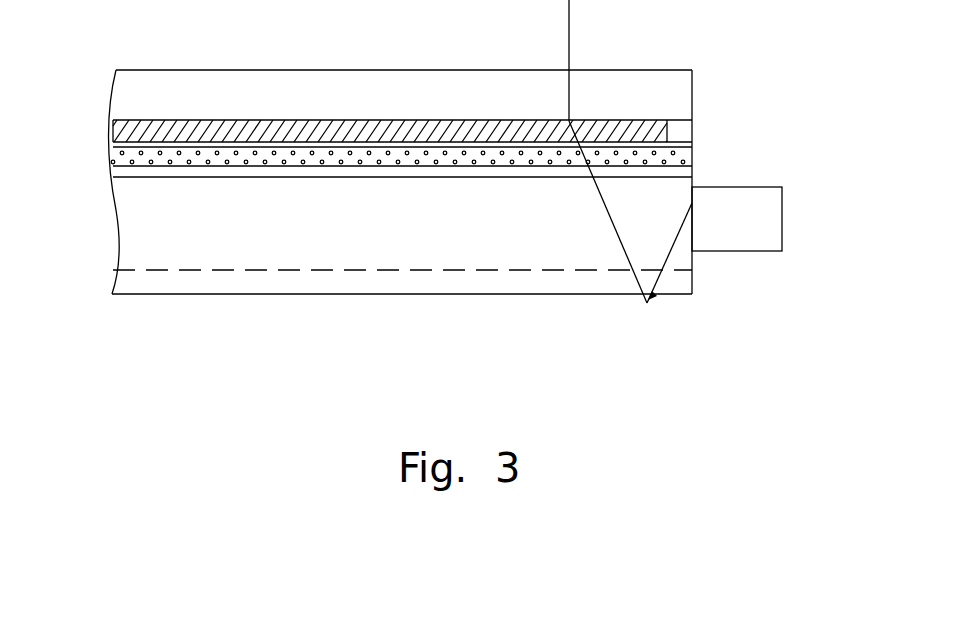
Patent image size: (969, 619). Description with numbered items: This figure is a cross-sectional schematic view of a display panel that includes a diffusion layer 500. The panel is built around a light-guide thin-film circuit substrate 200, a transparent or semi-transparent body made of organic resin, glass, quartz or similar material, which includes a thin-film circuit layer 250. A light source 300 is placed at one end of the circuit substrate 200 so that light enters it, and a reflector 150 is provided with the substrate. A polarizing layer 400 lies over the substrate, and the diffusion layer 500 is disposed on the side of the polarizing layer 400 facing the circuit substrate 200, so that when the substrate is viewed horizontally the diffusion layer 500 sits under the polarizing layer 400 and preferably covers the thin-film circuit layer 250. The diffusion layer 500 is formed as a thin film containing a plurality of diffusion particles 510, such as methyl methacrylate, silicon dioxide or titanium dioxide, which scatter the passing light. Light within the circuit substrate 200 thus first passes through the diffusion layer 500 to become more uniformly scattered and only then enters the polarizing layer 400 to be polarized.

The reflector 150 is at (297, 282).
The light-guide thin-film circuit substrate 200 is at (214, 250).
The thin-film circuit layer 250 is at (122, 173).
The light source 300 is at (730, 242).
The polarizing layer 400 is at (123, 143).
The diffusion layer 500 is at (121, 150).
The diffusion particles 510 is at (677, 154).